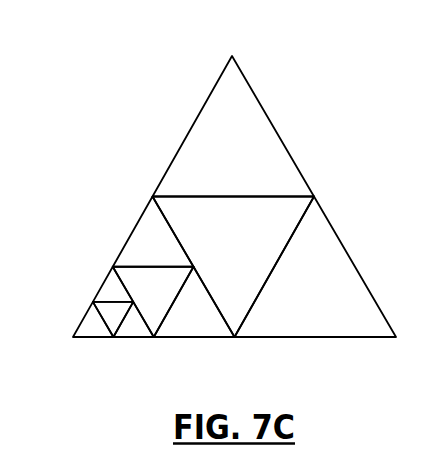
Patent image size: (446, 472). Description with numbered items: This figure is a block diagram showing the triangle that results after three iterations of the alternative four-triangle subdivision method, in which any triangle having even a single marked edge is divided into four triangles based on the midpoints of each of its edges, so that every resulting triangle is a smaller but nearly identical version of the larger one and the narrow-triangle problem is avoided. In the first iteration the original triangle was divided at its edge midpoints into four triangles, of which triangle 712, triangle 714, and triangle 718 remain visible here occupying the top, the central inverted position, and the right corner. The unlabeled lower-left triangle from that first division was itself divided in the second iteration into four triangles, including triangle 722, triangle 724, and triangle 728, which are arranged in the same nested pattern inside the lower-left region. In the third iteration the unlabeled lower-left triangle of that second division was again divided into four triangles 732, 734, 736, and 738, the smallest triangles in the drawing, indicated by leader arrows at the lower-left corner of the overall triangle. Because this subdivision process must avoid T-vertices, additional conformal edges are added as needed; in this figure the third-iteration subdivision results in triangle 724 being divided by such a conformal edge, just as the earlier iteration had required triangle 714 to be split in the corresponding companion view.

The triangle 712 is at (245, 172).
The triangle 714 is at (245, 242).
The triangle 718 is at (335, 312).
The triangle 722 is at (166, 260).
The triangle 724 is at (168, 295).
The triangle 728 is at (212, 328).
The triangle 732 is at (100, 280).
The triangle 734 is at (97, 314).
The triangle 736 is at (93, 352).
The triangle 738 is at (134, 351).